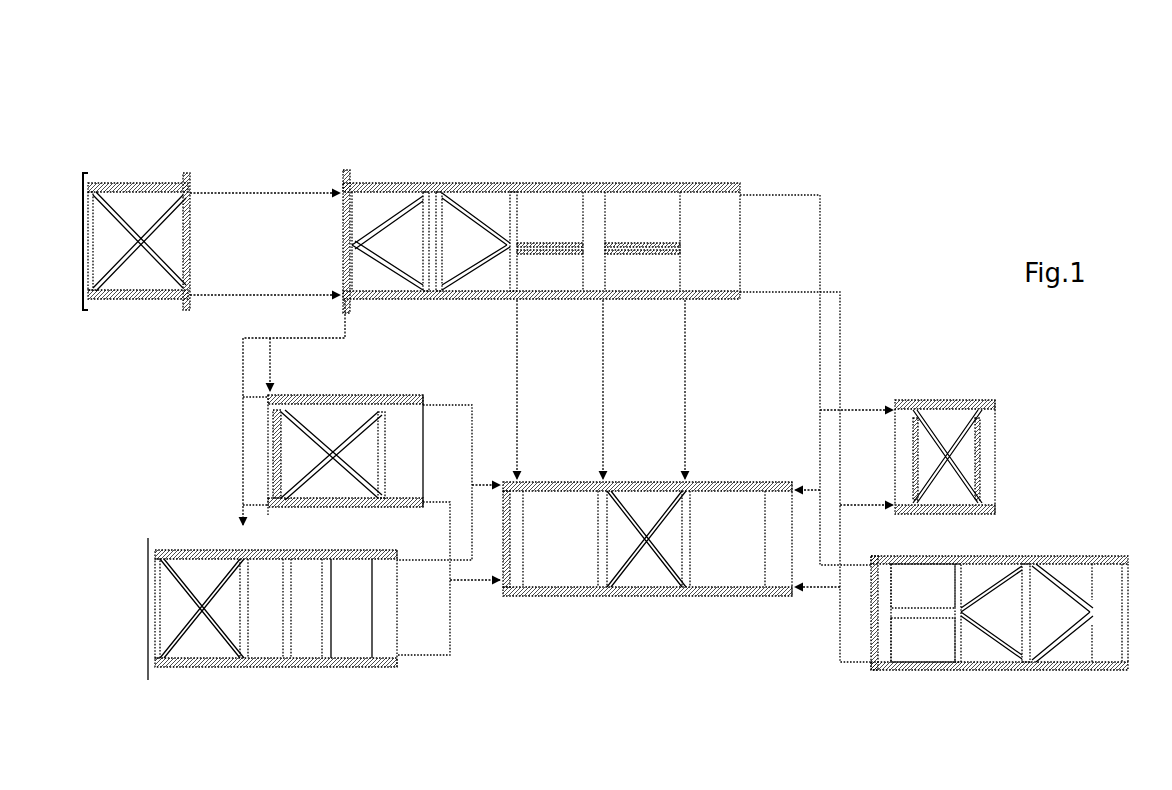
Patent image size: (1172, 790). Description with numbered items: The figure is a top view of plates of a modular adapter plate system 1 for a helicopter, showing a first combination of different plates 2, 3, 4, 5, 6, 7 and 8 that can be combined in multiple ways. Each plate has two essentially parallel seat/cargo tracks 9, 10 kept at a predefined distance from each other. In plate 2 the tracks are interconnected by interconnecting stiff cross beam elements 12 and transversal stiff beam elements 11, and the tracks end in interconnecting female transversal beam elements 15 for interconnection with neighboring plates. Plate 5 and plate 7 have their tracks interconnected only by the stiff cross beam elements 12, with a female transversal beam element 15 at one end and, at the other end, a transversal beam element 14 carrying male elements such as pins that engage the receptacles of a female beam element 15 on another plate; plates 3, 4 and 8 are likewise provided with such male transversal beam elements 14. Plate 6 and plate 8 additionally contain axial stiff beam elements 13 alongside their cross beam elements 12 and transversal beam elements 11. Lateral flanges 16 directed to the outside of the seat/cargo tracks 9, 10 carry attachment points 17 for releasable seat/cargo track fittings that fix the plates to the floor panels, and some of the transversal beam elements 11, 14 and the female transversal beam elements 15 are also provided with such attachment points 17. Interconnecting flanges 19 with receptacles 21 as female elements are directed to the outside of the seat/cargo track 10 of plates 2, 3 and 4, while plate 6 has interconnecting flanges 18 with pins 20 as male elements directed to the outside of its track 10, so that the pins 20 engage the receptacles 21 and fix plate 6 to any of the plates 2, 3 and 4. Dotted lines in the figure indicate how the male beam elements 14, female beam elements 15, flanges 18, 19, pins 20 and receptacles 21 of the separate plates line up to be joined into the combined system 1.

The modular adapter plate system 1 is at (915, 245).
The plate 2 is at (757, 615).
The plate 3 is at (190, 700).
The plate 4 is at (182, 455).
The plate 5 is at (150, 150).
The plate 6 is at (655, 184).
The plate 7 is at (1020, 440).
The plate 8 is at (945, 690).
The seat/cargo track 9 is at (341, 190).
The seat/cargo track 10 is at (341, 298).
The transversal stiff beam element 11 is at (438, 213).
The interconnecting stiff cross beam element 12 is at (138, 240).
The axial stiff beam element 13 is at (540, 257).
The transversal beam element with interconnecting male elements 14 is at (192, 243).
The interconnecting female transversal beam element 15 is at (343, 222).
The lateral flange 16 is at (177, 302).
The attachment point 17 is at (343, 247).
The interconnecting flange 18 is at (357, 304).
The interconnecting flange 19 is at (277, 392).
The pin 20 is at (191, 182).
The receptacle 21 is at (606, 478).